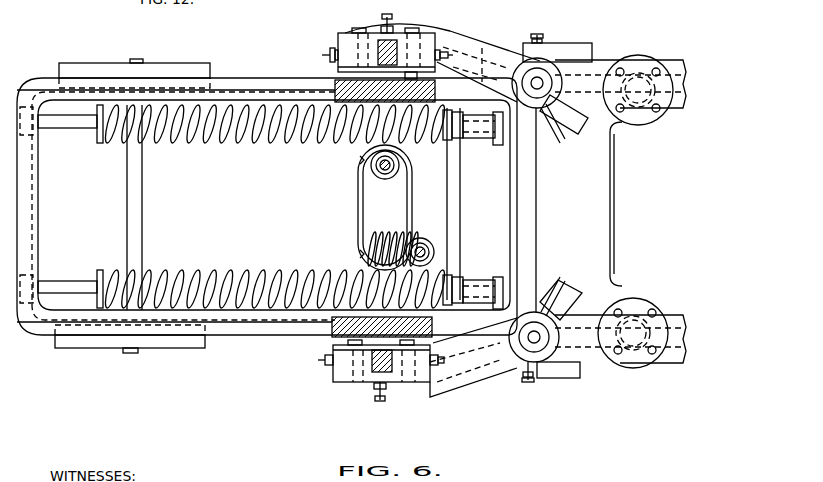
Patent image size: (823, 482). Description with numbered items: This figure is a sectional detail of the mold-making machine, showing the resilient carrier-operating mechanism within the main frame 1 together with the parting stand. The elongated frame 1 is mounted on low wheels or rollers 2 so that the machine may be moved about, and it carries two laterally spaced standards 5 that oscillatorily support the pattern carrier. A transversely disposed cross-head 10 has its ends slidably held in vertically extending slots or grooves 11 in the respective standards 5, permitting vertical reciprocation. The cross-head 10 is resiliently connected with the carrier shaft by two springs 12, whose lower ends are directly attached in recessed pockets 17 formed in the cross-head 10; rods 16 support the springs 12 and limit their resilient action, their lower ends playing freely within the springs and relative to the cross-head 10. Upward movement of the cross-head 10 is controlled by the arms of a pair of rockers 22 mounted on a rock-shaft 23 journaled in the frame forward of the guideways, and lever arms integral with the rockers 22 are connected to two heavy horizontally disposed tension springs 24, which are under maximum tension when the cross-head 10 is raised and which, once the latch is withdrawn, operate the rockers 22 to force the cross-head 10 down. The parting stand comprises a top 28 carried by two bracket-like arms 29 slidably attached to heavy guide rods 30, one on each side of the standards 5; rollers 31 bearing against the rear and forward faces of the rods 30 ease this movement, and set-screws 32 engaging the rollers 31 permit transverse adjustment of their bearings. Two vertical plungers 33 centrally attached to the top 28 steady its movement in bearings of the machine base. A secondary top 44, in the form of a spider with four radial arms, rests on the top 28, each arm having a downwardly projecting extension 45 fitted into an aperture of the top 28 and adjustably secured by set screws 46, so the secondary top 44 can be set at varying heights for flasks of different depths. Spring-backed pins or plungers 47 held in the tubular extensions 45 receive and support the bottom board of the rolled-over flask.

The frame 1 is at (267, 78).
The wheels or rollers 2 is at (95, 68).
The standards 5 is at (330, 322).
The cross-head 10 is at (357, 207).
The slots or grooves 11 is at (400, 100).
The springs 12 is at (296, 154).
The rods 16 is at (392, 165).
The recessed pockets 17 is at (362, 160).
The rockers 22 is at (492, 210).
The rock-shaft 23 is at (460, 210).
The tension springs 24 is at (195, 262).
The top 28 is at (607, 133).
The bracket-like arms 29 is at (497, 45).
The guide rods 30 is at (455, 8).
The rollers 31 is at (347, 35).
The set-screws 32 is at (330, 55).
The vertical plungers 33 is at (640, 75).
The secondary top 44 is at (545, 95).
The downwardly projecting extensions 45 is at (542, 110).
The set screws 46 is at (545, 46).
The pins or plungers 47 is at (568, 125).